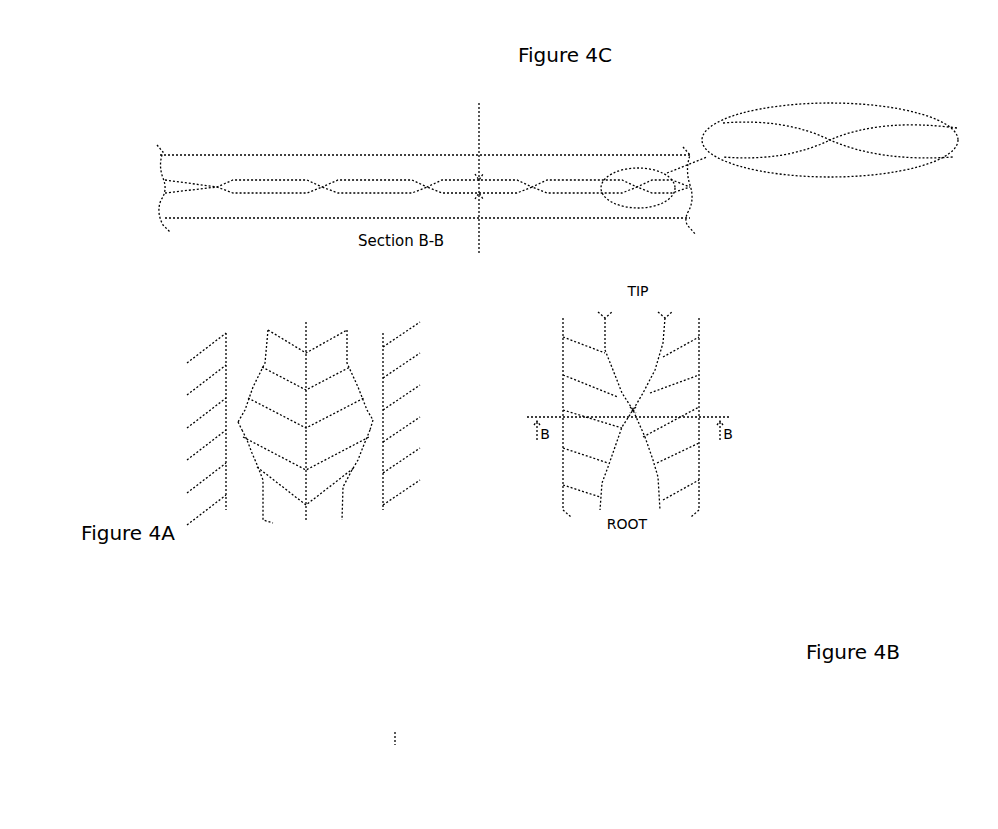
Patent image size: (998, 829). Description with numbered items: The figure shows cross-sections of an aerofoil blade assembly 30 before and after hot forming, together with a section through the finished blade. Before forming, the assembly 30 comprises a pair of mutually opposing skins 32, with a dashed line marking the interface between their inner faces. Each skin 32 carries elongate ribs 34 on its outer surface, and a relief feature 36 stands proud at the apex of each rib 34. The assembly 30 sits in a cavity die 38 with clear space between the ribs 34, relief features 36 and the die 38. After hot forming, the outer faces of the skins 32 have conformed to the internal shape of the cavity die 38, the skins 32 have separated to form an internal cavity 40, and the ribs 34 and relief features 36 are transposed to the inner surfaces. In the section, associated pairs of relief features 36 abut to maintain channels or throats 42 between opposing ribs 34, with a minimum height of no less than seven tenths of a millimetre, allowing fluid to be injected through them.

In FIG. 4A, the assembly 30 is at (225, 312).
In FIG. 4A, the skins 32 is at (287, 510).
In FIG. 4B, the skins 32 is at (687, 517).
In FIG. 4C, the elongate ribs 34 is at (402, 165).
In FIG. 4A, the elongate ribs 34 is at (249, 465).
In FIG. 4B, the elongate ribs 34 is at (660, 453).
In FIG. 4C, the relief features 36 is at (213, 178).
In FIG. 4A, the relief features 36 is at (232, 425).
In FIG. 4B, the relief features 36 is at (643, 405).
In FIG. 4A, the cavity die 38 is at (205, 382).
In FIG. 4B, the cavity die 38 is at (697, 472).
In FIG. 4B, the internal cavity 40 is at (633, 345).
In FIG. 4C, the channels or throats 42 is at (370, 185).